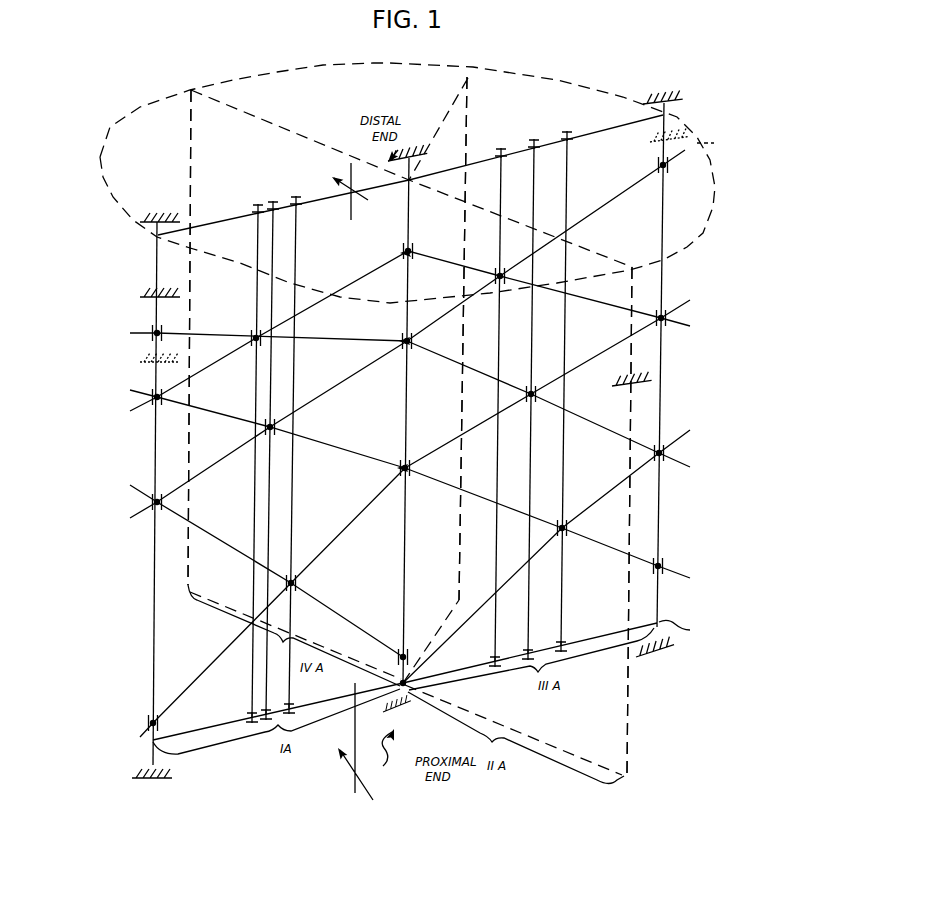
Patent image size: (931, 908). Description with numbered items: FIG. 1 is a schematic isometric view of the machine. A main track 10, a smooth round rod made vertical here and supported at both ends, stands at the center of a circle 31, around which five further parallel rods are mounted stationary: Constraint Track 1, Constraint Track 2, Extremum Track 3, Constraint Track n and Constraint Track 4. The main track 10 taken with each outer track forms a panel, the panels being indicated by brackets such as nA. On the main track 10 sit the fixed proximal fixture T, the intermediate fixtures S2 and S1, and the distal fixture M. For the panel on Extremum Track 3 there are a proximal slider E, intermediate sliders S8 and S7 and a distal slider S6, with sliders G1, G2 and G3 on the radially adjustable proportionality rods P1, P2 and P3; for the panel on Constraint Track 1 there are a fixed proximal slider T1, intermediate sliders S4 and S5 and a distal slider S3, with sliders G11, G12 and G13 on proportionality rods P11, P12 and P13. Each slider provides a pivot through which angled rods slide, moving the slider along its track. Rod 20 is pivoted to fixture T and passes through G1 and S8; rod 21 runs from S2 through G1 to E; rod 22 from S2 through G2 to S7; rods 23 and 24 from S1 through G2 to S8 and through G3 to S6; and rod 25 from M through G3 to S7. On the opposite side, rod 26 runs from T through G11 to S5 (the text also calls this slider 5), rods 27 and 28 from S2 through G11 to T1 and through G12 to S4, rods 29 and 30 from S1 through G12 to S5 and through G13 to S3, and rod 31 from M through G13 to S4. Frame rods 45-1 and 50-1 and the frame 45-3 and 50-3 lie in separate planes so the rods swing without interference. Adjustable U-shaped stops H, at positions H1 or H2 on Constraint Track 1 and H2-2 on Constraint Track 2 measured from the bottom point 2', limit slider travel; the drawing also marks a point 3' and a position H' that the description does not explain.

The main track 10 is at (411, 208).
The circle 31 is at (347, 64).
The rod 30 is at (342, 340).
The rod 29 is at (320, 392).
The rod 28 is at (363, 455).
The rod 27 is at (333, 527).
The rod 26 is at (350, 630).
The rod 25 is at (472, 268).
The rod 24 is at (453, 307).
The rod 23 is at (473, 375).
The rod 22 is at (473, 425).
The rod 21 is at (473, 505).
The rod 20 is at (468, 603).
The frame rod 45-1 is at (222, 736).
The frame 45-3 is at (595, 643).
The frame rod 50-1 is at (320, 196).
The frame 50-3 is at (627, 132).
The Constraint Track 2 is at (351, 490).
The slider 5 is at (388, 757).
The Constraint Track 1 is at (155, 657).
The Extremum Track 3 is at (697, 373).
The Constraint Track 4 is at (192, 152).
The Constraint Track n is at (468, 93).
The point 2' is at (682, 544).
The extremum track 3 end 3' is at (685, 630).
The intermediate fixture S1 is at (413, 341).
The intermediate fixture S2 is at (408, 468).
The distal slider S3 is at (152, 333).
The intermediate slider S4 is at (152, 396).
The intermediate slider S5 is at (152, 500).
The distal slider S6 is at (666, 167).
The intermediate slider S7 is at (664, 318).
The intermediate slider S8 is at (667, 453).
The slider G1 is at (568, 528).
The slider G2 is at (534, 392).
The slider G3 is at (503, 276).
The slider G11 is at (297, 584).
The slider G12 is at (276, 427).
The slider G13 is at (255, 338).
The proportionality rod P1 is at (572, 152).
The proportionality rod P2 is at (536, 163).
The proportionality rod P3 is at (503, 177).
The proportionality rod P11 is at (297, 223).
The proportionality rod P12 is at (273, 223).
The proportionality rod P13 is at (257, 228).
The distal fixture M is at (417, 252).
The proximal slider E is at (662, 566).
The stop H is at (399, 658).
The proximal fixture T is at (407, 652).
The proximal slider T1 is at (158, 723).
The stop H1 is at (150, 294).
The stop H2 is at (148, 362).
The stop H2-2 is at (652, 382).
The support H' is at (713, 144).
The panel nA is at (420, 672).